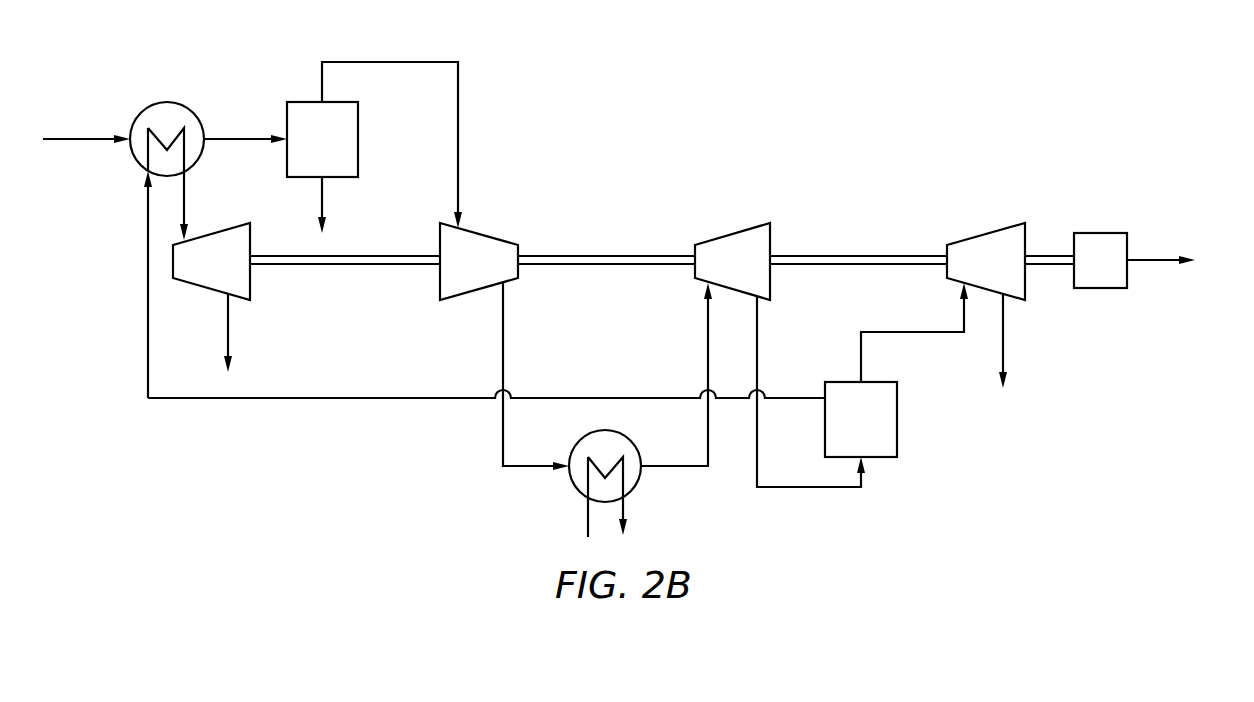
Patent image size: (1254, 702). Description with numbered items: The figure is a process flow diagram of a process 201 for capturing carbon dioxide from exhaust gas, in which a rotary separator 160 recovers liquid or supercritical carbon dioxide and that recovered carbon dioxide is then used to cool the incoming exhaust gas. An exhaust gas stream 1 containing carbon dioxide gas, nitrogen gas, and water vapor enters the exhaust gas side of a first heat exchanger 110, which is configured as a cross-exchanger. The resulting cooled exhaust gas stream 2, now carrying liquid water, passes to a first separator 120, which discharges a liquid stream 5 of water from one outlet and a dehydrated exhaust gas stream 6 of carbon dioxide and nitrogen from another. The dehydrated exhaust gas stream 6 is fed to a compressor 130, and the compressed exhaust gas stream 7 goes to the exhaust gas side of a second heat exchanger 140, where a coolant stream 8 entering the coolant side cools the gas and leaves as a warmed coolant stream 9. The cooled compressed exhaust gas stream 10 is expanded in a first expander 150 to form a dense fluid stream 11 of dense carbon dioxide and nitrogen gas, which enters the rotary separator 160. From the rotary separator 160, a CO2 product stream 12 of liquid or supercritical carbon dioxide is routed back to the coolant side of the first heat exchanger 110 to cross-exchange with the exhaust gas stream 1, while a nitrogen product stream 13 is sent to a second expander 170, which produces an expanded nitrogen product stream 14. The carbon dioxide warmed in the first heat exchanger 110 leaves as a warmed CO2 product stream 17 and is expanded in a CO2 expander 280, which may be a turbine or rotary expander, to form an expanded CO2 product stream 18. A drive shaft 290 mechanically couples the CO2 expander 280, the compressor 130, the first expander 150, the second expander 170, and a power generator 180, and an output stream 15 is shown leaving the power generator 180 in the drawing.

The process 201 is at (930, 37).
The first heat exchanger 110 is at (167, 103).
The first separator 120 is at (322, 139).
The compressor 130 is at (479, 261).
The second heat exchanger 140 is at (635, 442).
The first expander 150 is at (732, 261).
The rotary separator 160 is at (861, 419).
The second expander 170 is at (986, 261).
The power generator 180 is at (1100, 260).
The CO2 expander 280 is at (211, 261).
The drive shaft 290 is at (317, 265).
The exhaust gas stream 1 is at (78, 138).
The cooled exhaust gas stream 2 is at (235, 138).
The liquid stream 5 is at (323, 192).
The dehydrated exhaust gas stream 6 is at (396, 61).
The compressed exhaust gas stream 7 is at (502, 343).
The coolant stream 8 is at (587, 513).
The coolant stream 9 is at (627, 507).
The cooled compressed exhaust gas stream 10 is at (673, 467).
The dense fluid stream 11 is at (810, 487).
The CO2 product stream 12 is at (803, 397).
The nitrogen product stream 13 is at (913, 333).
The expanded nitrogen product stream 14 is at (1005, 315).
The product stream 15 is at (1147, 258).
The warmed CO2 product stream 17 is at (185, 192).
The expanded CO2 product stream 18 is at (230, 320).